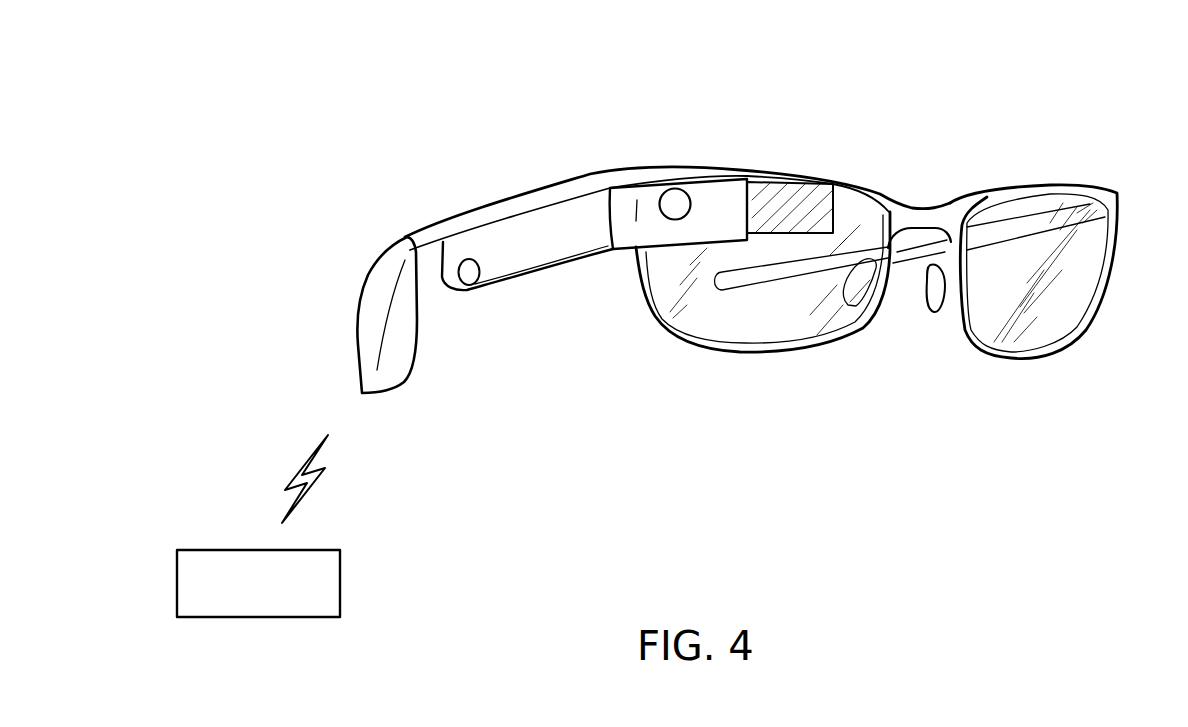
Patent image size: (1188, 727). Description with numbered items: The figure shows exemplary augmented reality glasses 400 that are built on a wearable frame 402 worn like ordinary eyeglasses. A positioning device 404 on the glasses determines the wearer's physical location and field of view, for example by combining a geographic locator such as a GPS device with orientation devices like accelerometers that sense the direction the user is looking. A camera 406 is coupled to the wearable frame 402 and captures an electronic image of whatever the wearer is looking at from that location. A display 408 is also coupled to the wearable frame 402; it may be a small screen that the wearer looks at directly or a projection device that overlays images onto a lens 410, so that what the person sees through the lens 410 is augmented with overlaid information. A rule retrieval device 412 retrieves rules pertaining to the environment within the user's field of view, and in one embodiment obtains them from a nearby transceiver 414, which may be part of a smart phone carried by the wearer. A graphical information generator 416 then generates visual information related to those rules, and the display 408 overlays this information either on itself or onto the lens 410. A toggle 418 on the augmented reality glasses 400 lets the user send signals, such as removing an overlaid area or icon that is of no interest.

The augmented reality glasses 400 is at (483, 92).
The wearable frame 402 is at (1103, 188).
The positioning device 404 is at (480, 243).
The camera 406 is at (692, 184).
The display 408 is at (783, 242).
The lens 410 is at (790, 322).
The rule retrieval device 412 is at (377, 340).
The transceiver 414 is at (342, 583).
The graphical information generator 416 is at (563, 217).
The toggle 418 is at (470, 287).